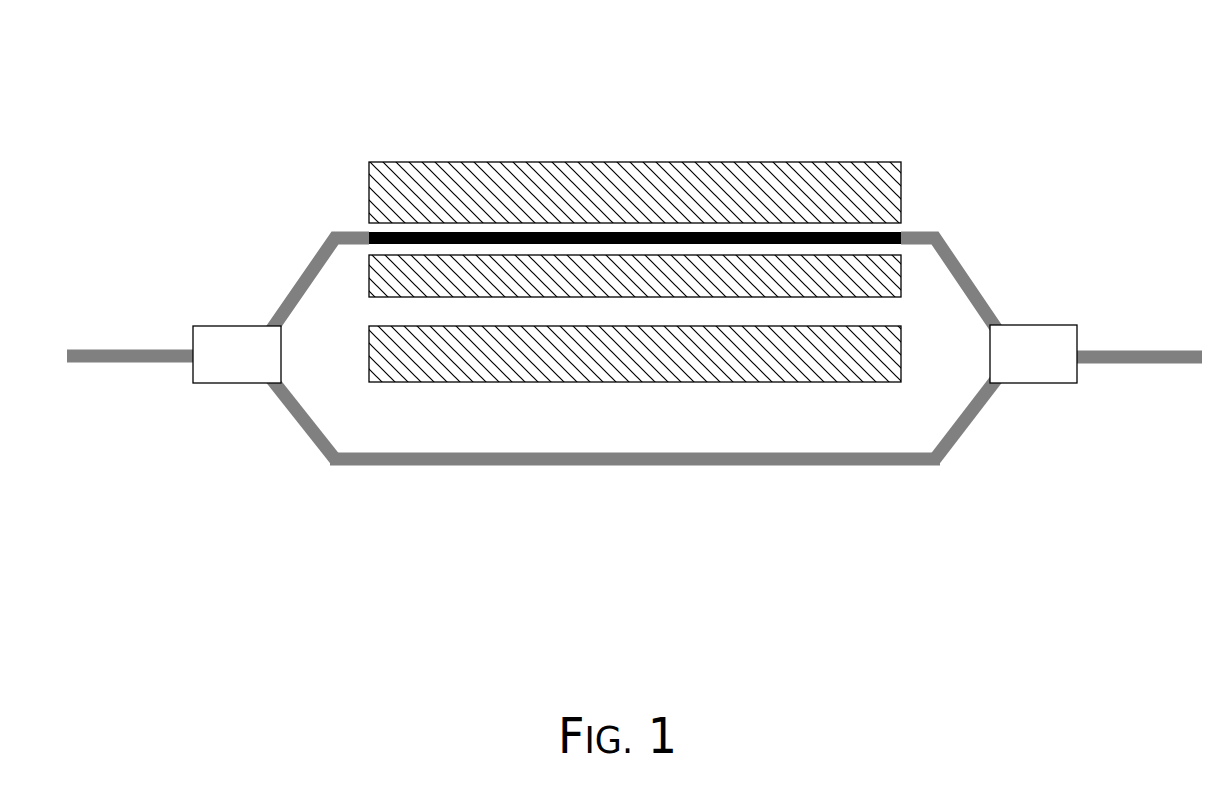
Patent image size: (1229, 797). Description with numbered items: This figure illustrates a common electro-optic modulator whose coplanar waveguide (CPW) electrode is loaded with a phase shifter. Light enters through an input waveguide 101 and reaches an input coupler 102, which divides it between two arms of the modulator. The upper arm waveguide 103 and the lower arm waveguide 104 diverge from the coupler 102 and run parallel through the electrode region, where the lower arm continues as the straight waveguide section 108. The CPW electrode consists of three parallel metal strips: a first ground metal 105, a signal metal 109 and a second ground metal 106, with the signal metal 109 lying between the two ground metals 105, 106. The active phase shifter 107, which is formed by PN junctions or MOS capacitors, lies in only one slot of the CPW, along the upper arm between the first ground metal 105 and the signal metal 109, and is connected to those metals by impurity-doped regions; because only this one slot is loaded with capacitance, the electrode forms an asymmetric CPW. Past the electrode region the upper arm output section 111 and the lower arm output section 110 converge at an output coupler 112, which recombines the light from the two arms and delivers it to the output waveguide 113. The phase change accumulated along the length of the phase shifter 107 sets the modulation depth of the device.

The input waveguide 101 is at (135, 351).
The input optical coupler 102 is at (197, 395).
The first modulation arm waveguide 103 is at (300, 274).
The second arm input section 104 is at (300, 438).
The first ground electrode 105 is at (430, 143).
The second ground electrode 106 is at (487, 393).
The optical modulation region 107 is at (575, 237).
The second arm waveguide 108 is at (589, 481).
The signal electrode 109 is at (725, 270).
The second arm output section 110 is at (976, 438).
The first arm output section 111 is at (978, 265).
The output optical coupler 112 is at (1072, 393).
The output waveguide 113 is at (1165, 350).